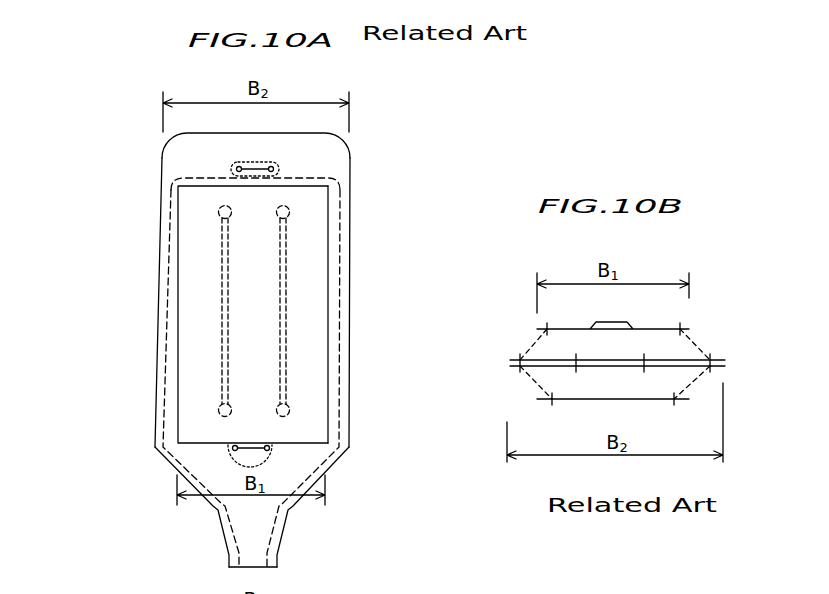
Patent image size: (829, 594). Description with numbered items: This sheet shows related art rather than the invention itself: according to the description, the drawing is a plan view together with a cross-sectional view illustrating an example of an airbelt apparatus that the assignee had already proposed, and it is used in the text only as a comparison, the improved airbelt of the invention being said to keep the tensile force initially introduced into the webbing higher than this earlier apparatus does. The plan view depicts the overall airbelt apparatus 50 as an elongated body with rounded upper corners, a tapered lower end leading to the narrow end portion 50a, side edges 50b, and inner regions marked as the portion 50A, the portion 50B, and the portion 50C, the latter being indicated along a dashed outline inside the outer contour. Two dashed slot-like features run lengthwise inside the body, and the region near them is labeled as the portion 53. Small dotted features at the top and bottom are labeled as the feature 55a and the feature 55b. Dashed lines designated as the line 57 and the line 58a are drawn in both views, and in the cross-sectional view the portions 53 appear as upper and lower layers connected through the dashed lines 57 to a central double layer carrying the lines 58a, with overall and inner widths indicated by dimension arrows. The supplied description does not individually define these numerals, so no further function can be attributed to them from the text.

In FIG. 10A, the packaging bag (related art) 50 is at (372, 291).
In FIG. 10A, the spout / mouth portion of bag 50a is at (253, 568).
In FIG. 10A, the side edge of bag 50b is at (158, 283).
In FIG. 10A, the front panel of bag 50A is at (323, 263).
In FIG. 10A, the back panel of bag 50B is at (264, 210).
In FIG. 10A, the gusset portion of bag 50C is at (172, 322).
In FIG. 10A, the side seal portion 53 is at (311, 408).
In FIG. 10B, the side seal portion 53 is at (653, 328).
In FIG. 10A, the upper hanging hole 55a is at (256, 164).
In FIG. 10A, the lower hanging hole 55b is at (271, 453).
In FIG. 10A, the fold line 57 is at (176, 179).
In FIG. 10B, the fold line 57 is at (517, 369).
In FIG. 10A, the gusset seal line 58a is at (218, 253).
In FIG. 10B, the gusset seal line 58a is at (575, 359).